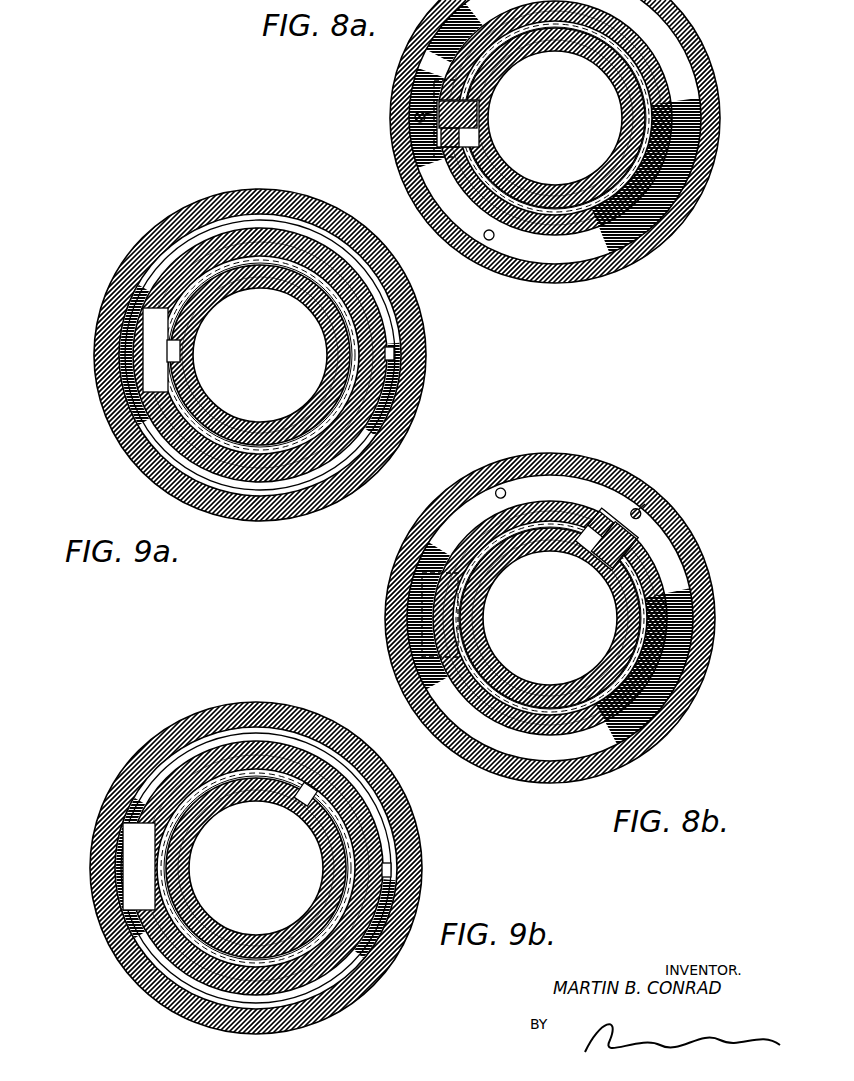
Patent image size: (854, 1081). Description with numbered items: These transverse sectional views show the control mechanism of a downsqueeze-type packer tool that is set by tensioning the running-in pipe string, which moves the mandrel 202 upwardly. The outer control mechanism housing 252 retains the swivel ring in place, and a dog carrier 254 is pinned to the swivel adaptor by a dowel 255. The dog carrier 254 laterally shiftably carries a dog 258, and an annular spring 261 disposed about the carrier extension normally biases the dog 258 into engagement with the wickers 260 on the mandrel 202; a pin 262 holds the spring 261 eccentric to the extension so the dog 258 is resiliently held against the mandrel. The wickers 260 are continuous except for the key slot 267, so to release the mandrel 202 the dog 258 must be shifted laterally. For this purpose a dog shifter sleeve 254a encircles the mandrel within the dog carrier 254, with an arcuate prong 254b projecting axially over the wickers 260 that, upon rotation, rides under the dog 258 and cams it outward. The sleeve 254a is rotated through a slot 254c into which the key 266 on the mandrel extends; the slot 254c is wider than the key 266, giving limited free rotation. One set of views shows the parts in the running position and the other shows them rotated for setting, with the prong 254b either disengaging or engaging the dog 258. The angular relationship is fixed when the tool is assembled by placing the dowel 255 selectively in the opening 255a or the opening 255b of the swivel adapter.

In FIG. 8A, the mandrel 202 is at (607, 90).
In FIG. 8B, the mandrel 202 is at (606, 623).
In FIG. 9A, the mandrel 202 is at (314, 331).
In FIG. 9B, the mandrel 202 is at (258, 813).
In FIG. 8A, the control mechanism housing 252 is at (706, 80).
In FIG. 8B, the control mechanism housing 252 is at (712, 627).
In FIG. 9A, the control mechanism housing 252 is at (260, 355).
In FIG. 9B, the control mechanism housing 252 is at (140, 968).
In FIG. 8A, the dog carrier 254 is at (692, 118).
In FIG. 8B, the dog carrier 254 is at (660, 537).
In FIG. 9A, the dog carrier 254 is at (365, 305).
In FIG. 8A, the dog shifter sleeve 254a is at (657, 160).
In FIG. 8B, the dog shifter sleeve 254a is at (657, 597).
In FIG. 8A, the arcuate prong 254b is at (623, 195).
In FIG. 8B, the arcuate prong 254b is at (458, 655).
In FIG. 9A, the arcuate prong 254b is at (347, 405).
In FIG. 9B, the arcuate prong 254b is at (165, 818).
In FIG. 8A, the slot 254c is at (480, 97).
In FIG. 8B, the slot 254c is at (646, 569).
In FIG. 8A, the dowel 255 is at (416, 120).
In FIG. 8B, the dowel 255 is at (640, 517).
In FIG. 8A, the opening 255a is at (418, 114).
In FIG. 8B, the opening 255a is at (639, 510).
In FIG. 8A, the opening 255b is at (487, 241).
In FIG. 8B, the opening 255b is at (494, 490).
In FIG. 8A, the dog 258 is at (458, 93).
In FIG. 8B, the dog 258 is at (420, 617).
In FIG. 9A, the dog 258 is at (145, 357).
In FIG. 9B, the dog 258 is at (128, 873).
In FIG. 8A, the wickers 260 is at (517, 181).
In FIG. 8B, the wickers 260 is at (505, 690).
In FIG. 9A, the wickers 260 is at (204, 279).
In FIG. 9A, the annular spring 261 is at (386, 327).
In FIG. 9B, the annular spring 261 is at (388, 835).
In FIG. 9A, the pin 262 is at (395, 353).
In FIG. 9B, the pin 262 is at (392, 868).
In FIG. 8A, the key 266 is at (462, 134).
In FIG. 8B, the key 266 is at (616, 545).
In FIG. 8A, the key slot 267 is at (478, 115).
In FIG. 8B, the key slot 267 is at (606, 546).
In FIG. 9A, the key slot 267 is at (182, 352).
In FIG. 9B, the key slot 267 is at (300, 808).